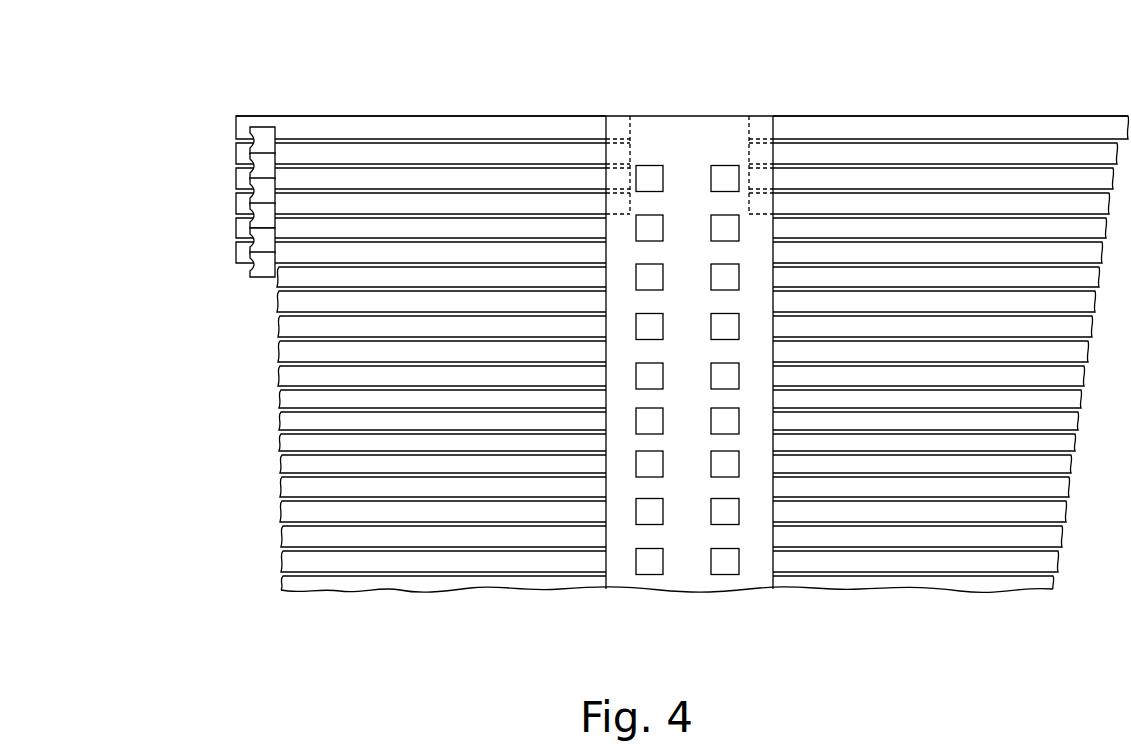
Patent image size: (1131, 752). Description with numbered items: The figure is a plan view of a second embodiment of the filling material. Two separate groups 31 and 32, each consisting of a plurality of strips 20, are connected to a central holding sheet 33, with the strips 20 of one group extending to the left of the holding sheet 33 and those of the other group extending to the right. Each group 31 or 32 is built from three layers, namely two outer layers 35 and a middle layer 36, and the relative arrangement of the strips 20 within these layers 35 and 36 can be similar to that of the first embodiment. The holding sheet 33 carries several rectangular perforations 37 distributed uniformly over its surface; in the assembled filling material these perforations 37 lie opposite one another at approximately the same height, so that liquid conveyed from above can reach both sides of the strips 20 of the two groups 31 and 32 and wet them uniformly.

The strips 20 is at (517, 152).
The first group 31 is at (386, 596).
The second group 32 is at (880, 594).
The holding sheet 33 is at (688, 137).
The outer layers 35 is at (362, 108).
The middle layer 36 is at (262, 283).
The perforations 37 is at (722, 562).